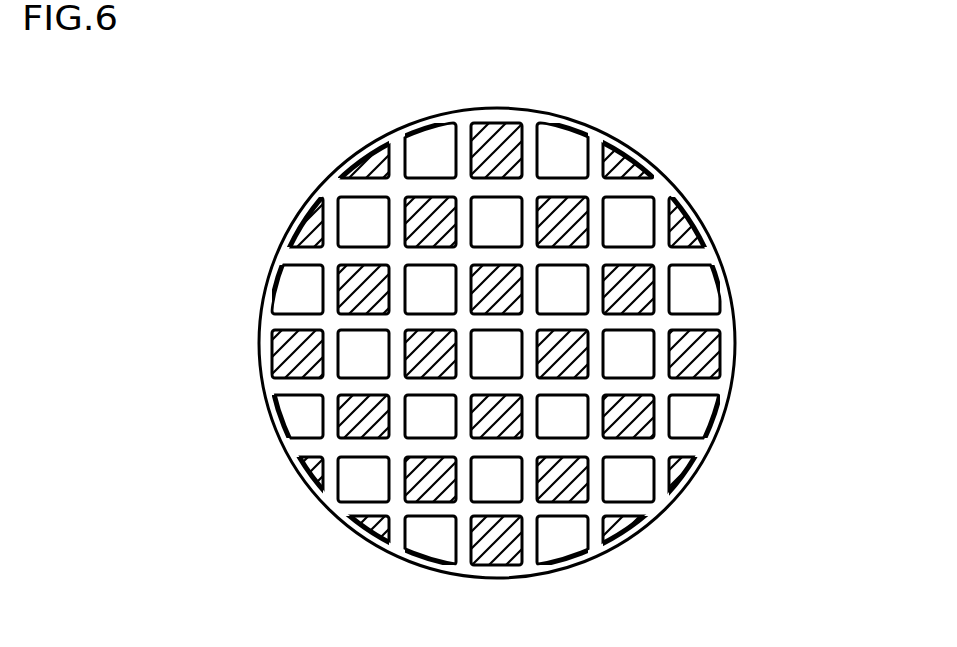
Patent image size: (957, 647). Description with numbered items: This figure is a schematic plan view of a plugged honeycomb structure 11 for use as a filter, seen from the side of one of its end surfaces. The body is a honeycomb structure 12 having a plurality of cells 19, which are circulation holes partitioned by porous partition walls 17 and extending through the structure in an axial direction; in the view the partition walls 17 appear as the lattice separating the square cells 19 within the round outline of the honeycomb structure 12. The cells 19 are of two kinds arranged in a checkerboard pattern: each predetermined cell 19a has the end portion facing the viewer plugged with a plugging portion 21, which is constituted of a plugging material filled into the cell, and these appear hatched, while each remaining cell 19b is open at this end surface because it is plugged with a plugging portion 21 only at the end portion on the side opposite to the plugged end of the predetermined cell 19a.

The plugged honeycomb structure 11 is at (612, 87).
The honeycomb structure 12 is at (727, 307).
The porous partition walls 17 is at (426, 332).
The cells 19 is at (137, 220).
The predetermined cell 19a is at (432, 229).
The remaining cell 19b is at (420, 282).
The plugging portion 21 is at (421, 205).